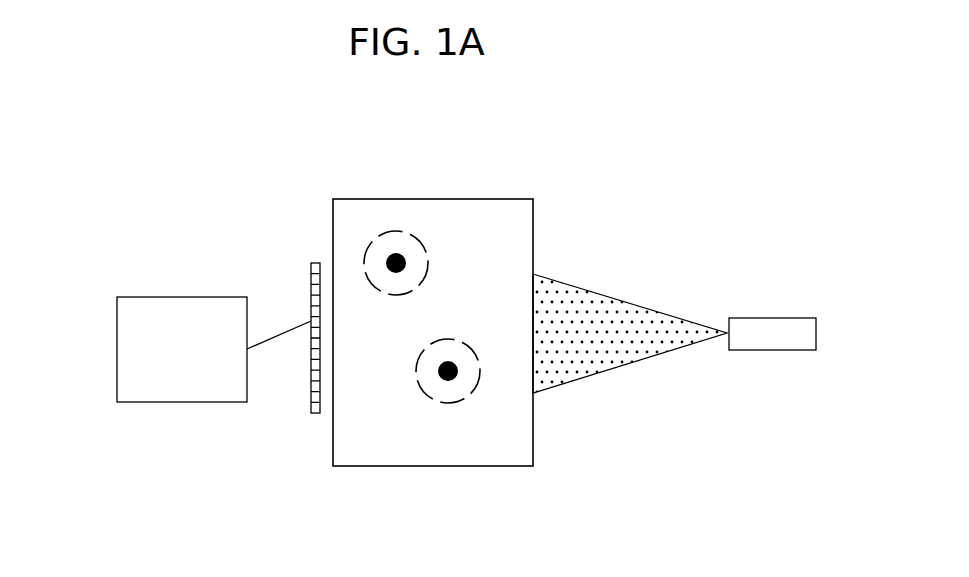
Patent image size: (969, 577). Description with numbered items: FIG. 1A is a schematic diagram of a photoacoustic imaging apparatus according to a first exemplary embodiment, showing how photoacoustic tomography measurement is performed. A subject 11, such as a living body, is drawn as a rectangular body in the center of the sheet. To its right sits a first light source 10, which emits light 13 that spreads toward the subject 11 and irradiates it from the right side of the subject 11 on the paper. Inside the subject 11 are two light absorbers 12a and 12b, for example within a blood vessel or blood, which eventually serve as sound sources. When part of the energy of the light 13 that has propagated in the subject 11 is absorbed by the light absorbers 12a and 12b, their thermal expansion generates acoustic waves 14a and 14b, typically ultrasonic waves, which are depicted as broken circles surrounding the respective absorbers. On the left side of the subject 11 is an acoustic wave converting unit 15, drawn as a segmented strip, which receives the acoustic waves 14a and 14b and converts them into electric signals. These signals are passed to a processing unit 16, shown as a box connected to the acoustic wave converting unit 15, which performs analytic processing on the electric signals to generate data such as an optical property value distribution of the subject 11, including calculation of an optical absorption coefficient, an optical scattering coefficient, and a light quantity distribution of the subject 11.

The first light source 10 is at (785, 322).
The subject 11 is at (500, 206).
The light absorber 12a is at (392, 255).
The light absorber 12b is at (437, 382).
The light 13 is at (608, 303).
The acoustic wave 14a is at (422, 240).
The acoustic wave 14b is at (479, 379).
The acoustic wave converting unit 15 is at (307, 417).
The processing unit 16 is at (137, 385).